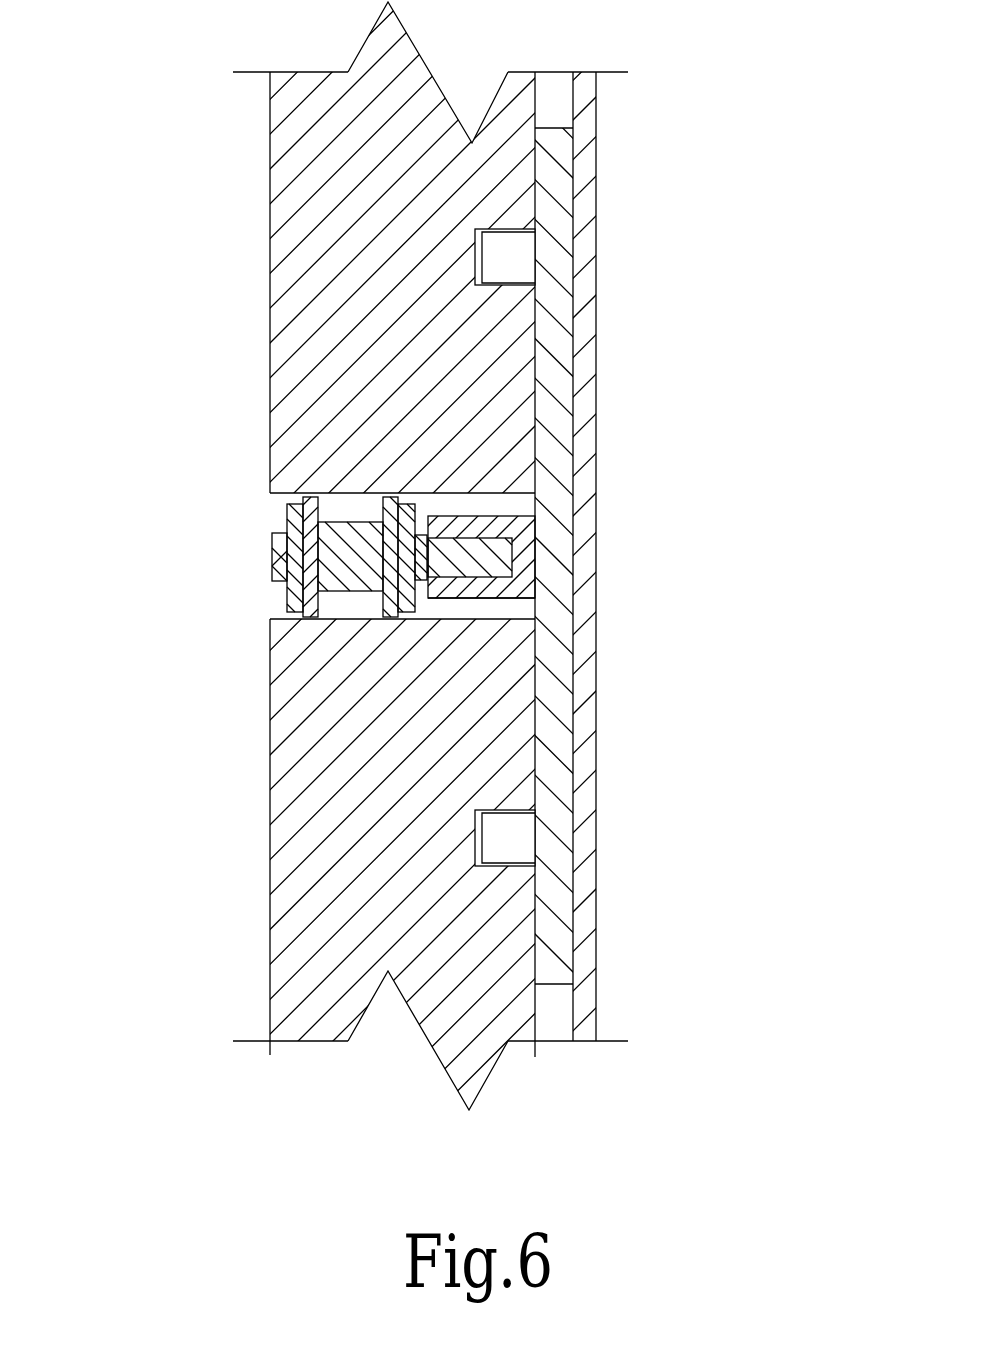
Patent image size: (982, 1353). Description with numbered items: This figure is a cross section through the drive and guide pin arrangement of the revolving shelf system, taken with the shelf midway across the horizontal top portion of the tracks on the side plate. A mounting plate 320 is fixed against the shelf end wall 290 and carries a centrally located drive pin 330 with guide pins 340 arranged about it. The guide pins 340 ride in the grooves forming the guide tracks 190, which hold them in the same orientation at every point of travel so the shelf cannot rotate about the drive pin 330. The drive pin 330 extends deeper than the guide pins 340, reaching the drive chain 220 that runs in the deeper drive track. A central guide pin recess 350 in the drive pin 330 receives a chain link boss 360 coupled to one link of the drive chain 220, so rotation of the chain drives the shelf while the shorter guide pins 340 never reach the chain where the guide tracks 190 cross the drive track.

The guide track 190 is at (473, 258).
The drive chain 220 is at (348, 555).
The shelf end wall 290 is at (587, 445).
The mounting plate 320 is at (548, 377).
The drive pin 330 is at (502, 598).
The guide pin 340 is at (507, 258).
The central guide pin recess 350 is at (495, 522).
The chain link boss 360 is at (483, 560).